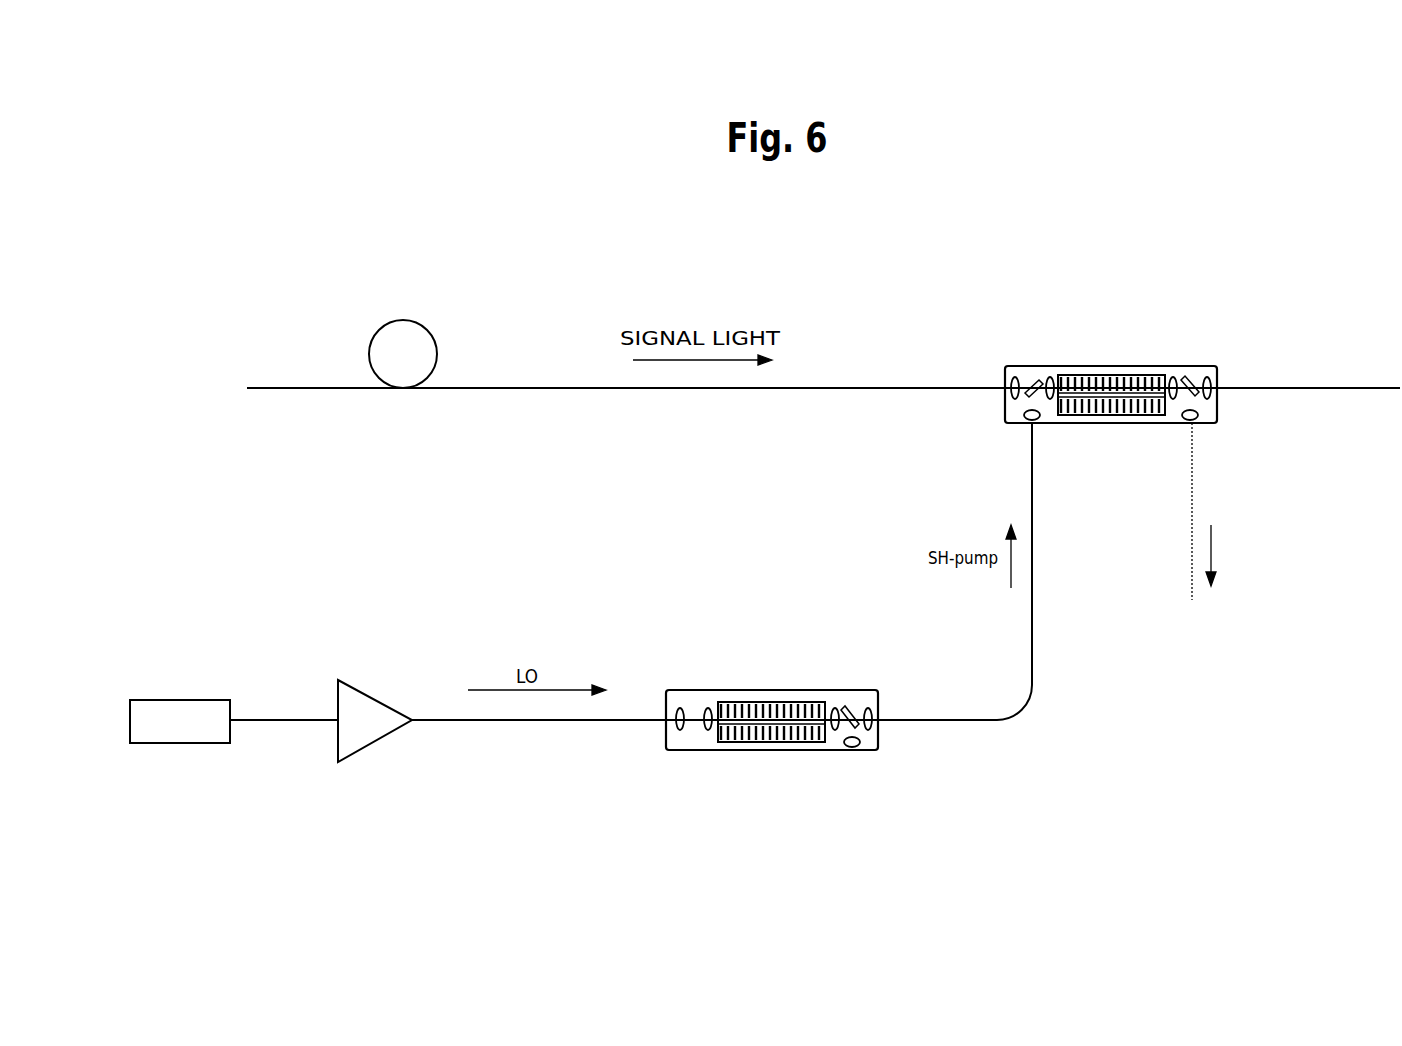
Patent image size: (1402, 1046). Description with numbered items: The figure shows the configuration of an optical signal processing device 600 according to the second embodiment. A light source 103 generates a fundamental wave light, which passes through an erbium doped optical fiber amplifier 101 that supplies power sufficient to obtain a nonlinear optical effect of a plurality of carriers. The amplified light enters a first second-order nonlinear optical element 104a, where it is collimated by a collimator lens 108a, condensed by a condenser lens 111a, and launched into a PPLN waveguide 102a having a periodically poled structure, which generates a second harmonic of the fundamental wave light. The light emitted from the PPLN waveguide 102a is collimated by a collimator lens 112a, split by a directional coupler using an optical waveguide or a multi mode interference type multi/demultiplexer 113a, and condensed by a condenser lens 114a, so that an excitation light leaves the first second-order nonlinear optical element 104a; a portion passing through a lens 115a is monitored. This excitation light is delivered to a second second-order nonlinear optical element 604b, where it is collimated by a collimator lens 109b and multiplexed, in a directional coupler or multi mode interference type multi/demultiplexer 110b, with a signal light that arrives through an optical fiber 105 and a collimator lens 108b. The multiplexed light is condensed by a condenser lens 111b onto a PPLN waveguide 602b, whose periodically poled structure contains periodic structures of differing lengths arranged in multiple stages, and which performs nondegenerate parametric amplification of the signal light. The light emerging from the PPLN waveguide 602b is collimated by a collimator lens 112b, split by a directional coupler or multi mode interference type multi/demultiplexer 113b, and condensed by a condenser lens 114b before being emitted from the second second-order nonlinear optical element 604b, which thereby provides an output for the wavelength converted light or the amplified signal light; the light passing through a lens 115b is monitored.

The optical signal processing device 600 is at (1312, 268).
The optical fiber 105 is at (531, 387).
The light source 103 is at (182, 699).
The erbium doped optical fiber amplifier 101 is at (366, 694).
The first second-order nonlinear optical element 104a is at (735, 690).
The PPLN waveguide 102a is at (798, 716).
The collimator lens 108a is at (676, 730).
The condenser lens 111a is at (707, 708).
The collimator lens 112a is at (836, 708).
The multi/demultiplexer 113a is at (857, 707).
The condenser lens 114a is at (872, 728).
The lens 115a is at (862, 748).
The second second-order nonlinear optical element 604b is at (1077, 366).
The PPLN waveguide 602b is at (1148, 388).
The collimator lens 108b is at (1012, 398).
The collimator lens 109b is at (1026, 418).
The multi/demultiplexer 110b is at (1030, 383).
The condenser lens 111b is at (1049, 377).
The collimator lens 112b is at (1173, 377).
The multi/demultiplexer 113b is at (1191, 386).
The condenser lens 114b is at (1210, 397).
The lens 115b is at (1196, 418).